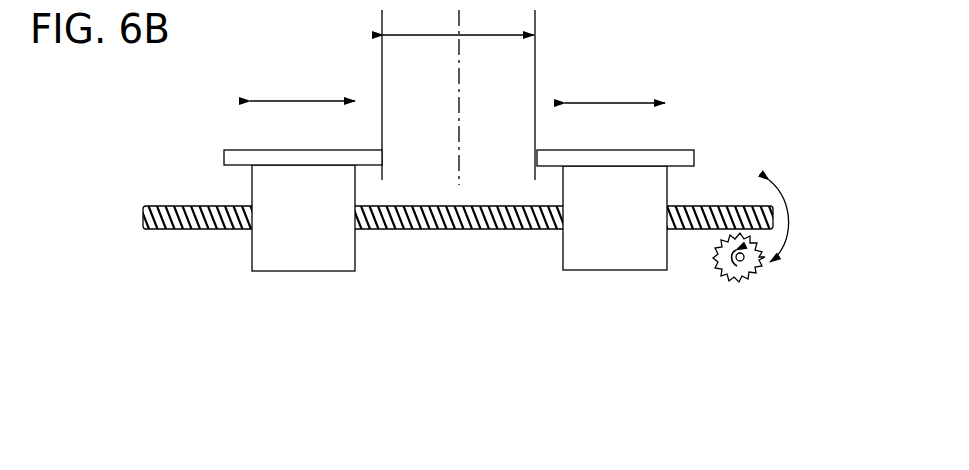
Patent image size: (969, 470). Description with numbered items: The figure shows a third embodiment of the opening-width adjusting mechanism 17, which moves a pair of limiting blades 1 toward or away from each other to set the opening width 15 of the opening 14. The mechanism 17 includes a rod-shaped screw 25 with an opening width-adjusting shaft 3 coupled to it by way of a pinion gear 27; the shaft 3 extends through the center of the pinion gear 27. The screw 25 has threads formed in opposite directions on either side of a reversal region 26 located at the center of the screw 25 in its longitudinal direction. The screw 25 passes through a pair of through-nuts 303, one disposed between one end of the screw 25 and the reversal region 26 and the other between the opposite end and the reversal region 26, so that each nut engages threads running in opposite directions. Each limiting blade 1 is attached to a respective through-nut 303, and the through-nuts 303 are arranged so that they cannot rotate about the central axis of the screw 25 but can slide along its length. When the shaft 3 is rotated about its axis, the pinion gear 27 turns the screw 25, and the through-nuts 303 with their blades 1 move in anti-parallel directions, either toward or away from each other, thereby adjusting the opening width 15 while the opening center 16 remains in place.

The limiting blade 1 is at (238, 155).
The opening 14 is at (497, 148).
The opening width 15 is at (458, 21).
The opening center 16 is at (461, 158).
The rod-shaped screw 25 is at (523, 230).
The reversal region 26 is at (469, 230).
The through-nut 303 is at (313, 255).
The opening width-adjusting shaft 3 is at (728, 272).
The pinion gear 27 is at (741, 262).
The opening-width adjusting mechanism 17 is at (486, 372).